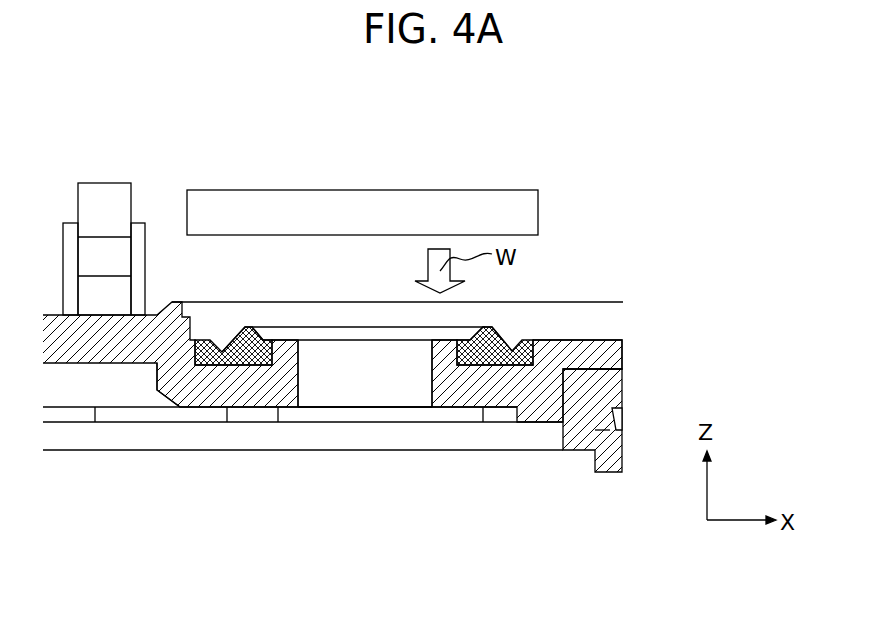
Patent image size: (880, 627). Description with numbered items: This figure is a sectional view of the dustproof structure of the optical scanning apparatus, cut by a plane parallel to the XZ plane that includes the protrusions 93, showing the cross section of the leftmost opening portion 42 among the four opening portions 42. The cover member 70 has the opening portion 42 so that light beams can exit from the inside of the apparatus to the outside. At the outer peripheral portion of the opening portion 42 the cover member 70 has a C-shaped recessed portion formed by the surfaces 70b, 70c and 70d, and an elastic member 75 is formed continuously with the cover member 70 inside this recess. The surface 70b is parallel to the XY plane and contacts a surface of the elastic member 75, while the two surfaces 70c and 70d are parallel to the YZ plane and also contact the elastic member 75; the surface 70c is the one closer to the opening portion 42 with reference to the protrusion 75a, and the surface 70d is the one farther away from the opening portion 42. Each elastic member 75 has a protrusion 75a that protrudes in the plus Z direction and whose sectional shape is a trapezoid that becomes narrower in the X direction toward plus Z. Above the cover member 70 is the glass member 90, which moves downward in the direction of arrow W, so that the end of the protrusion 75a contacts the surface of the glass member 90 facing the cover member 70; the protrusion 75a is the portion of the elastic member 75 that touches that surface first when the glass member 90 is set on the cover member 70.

The protrusion 93 is at (102, 193).
The glass member 90 is at (467, 202).
The elastic member 75 is at (272, 337).
The protrusion 75a is at (240, 334).
The cover member 70 is at (467, 397).
The surface 70b is at (224, 383).
The surface 70c is at (432, 355).
The surface 70d is at (162, 393).
The opening portion 42 is at (378, 398).